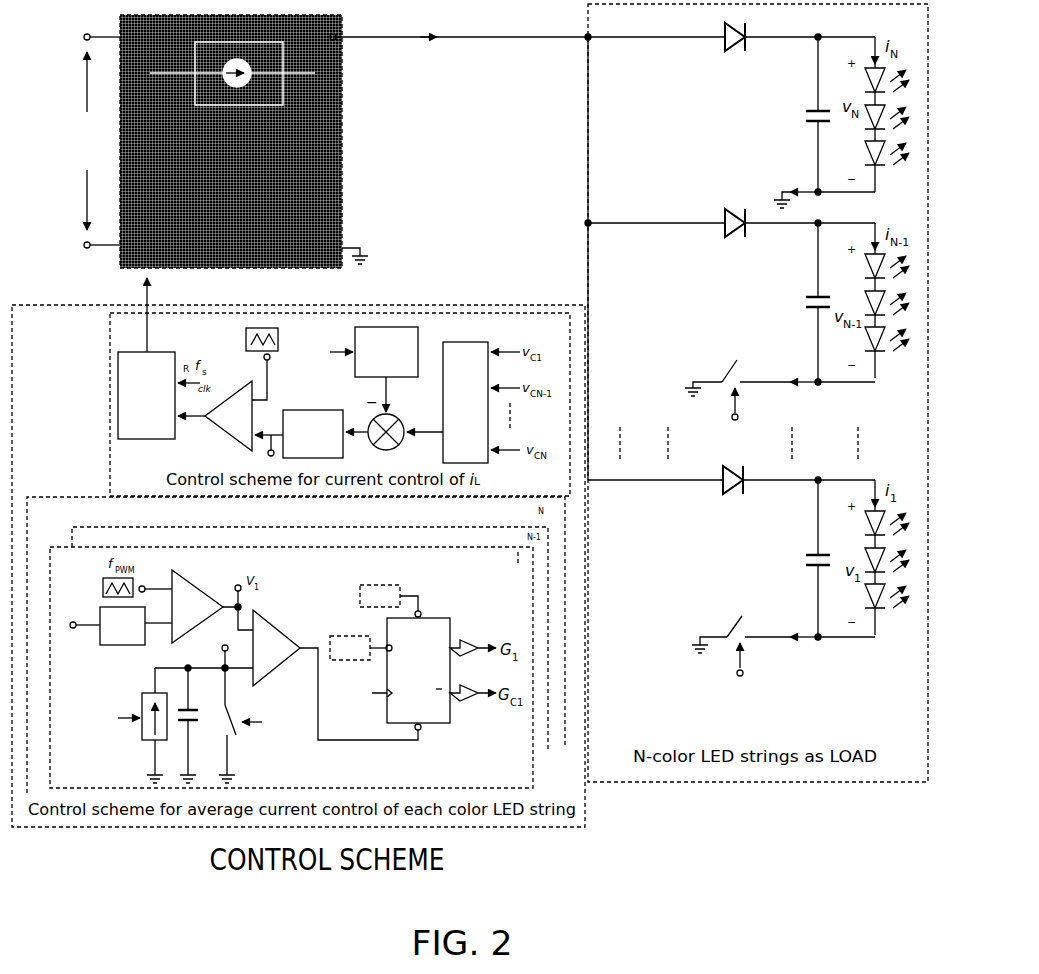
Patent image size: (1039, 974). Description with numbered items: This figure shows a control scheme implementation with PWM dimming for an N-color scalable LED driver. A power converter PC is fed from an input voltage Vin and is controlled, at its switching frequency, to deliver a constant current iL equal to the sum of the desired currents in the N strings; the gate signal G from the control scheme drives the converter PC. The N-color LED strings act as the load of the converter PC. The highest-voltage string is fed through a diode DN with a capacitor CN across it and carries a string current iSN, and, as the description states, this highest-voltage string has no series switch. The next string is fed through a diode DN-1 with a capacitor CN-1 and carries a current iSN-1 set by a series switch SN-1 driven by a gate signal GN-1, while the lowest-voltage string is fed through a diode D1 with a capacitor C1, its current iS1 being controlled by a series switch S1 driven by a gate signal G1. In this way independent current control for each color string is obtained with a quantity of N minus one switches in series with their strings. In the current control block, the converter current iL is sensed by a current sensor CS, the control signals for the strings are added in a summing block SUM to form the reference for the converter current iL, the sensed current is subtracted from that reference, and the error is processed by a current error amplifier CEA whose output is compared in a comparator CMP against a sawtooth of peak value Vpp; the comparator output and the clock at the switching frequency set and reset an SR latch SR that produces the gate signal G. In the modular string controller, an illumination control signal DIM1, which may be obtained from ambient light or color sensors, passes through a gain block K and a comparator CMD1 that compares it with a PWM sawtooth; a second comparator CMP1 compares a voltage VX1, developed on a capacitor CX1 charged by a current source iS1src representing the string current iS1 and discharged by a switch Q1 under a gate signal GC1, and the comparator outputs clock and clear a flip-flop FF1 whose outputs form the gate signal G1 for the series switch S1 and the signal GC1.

The power converter PC is at (231, 141).
The input voltage Vin is at (82, 141).
The constant current iL is at (462, 57).
The gate signal to power converter G is at (156, 315).
The diode of Nth LED string DN is at (703, 58).
The capacitor of Nth LED string CN is at (805, 114).
The switch current of Nth string iSN is at (796, 184).
The diode of (N-1)th LED string DN-1 is at (703, 243).
The capacitor of (N-1)th LED string CN-1 is at (803, 302).
The switch current of (N-1)th string iSN-1 is at (779, 366).
The switch SN-1 is at (717, 376).
The gate signal of switch SN-1 GN-1 is at (760, 425).
The diode of first LED string D1 is at (703, 499).
The capacitor of first LED string C1 is at (806, 558).
The switch current of first string iS1 is at (781, 623).
The switch S1 is at (723, 635).
The gate signal of switch S1 G1 is at (757, 681).
The SR latch SR is at (146, 395).
The comparator CMP is at (215, 416).
The sawtooth peak voltage Vpp is at (270, 364).
The current error amplifier CEA(s) CEA is at (299, 434).
The current sensor CS(s) CS is at (367, 352).
The summing block SUM is at (465, 402).
The gain block K(s) K is at (122, 626).
The illumination control signal DIM1 is at (75, 642).
The comparator CMD1 is at (197, 606).
The comparator CMP1 is at (276, 648).
The voltage VX1 is at (210, 654).
The current source iS1 iS1src is at (132, 725).
The capacitor CX1 is at (197, 725).
The switch Q1 is at (235, 725).
The gate signal GC1 is at (266, 723).
The flip-flop FF1 is at (398, 662).